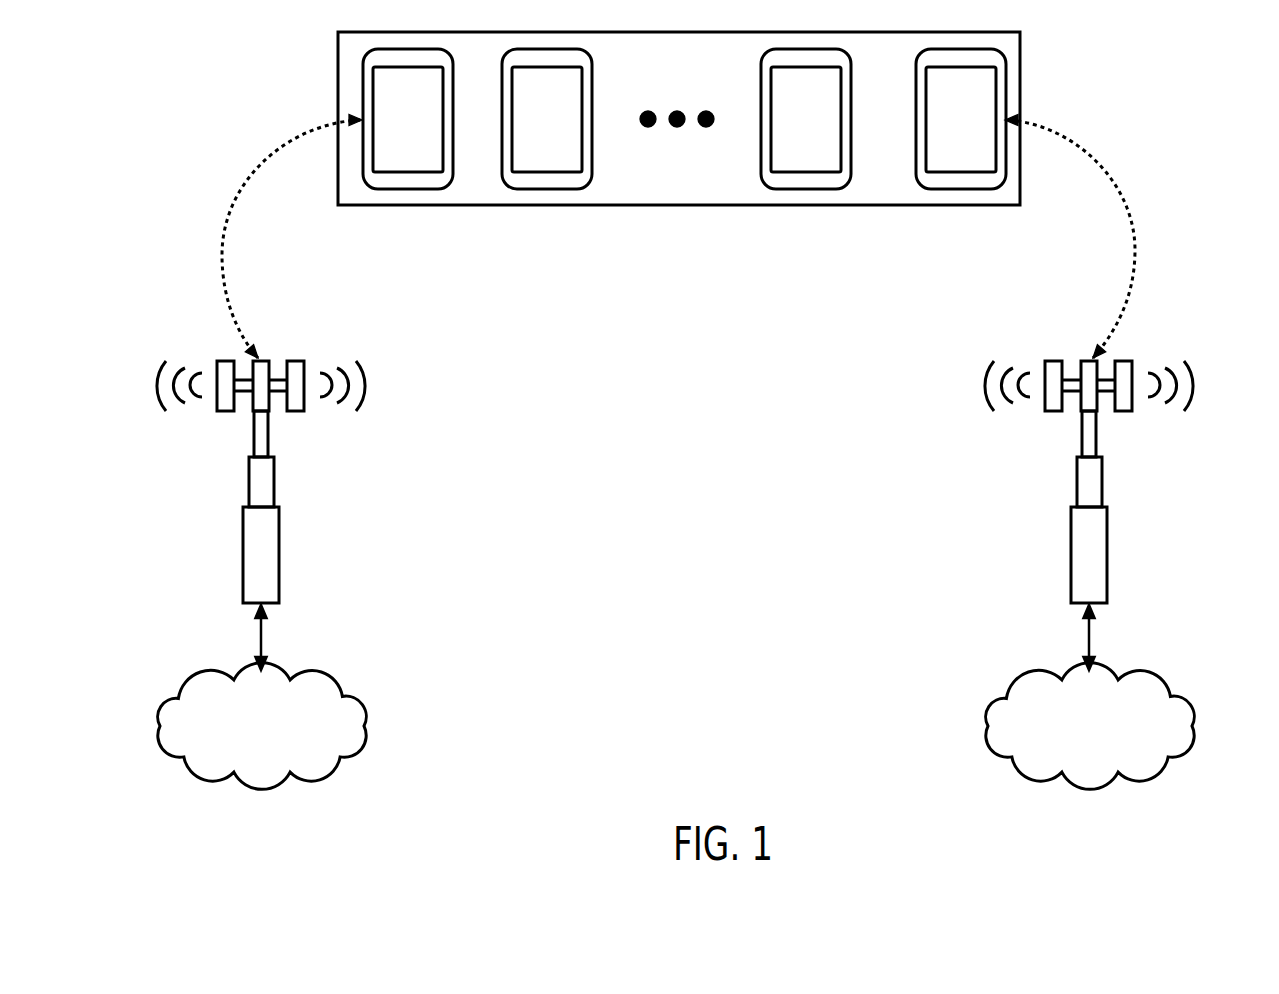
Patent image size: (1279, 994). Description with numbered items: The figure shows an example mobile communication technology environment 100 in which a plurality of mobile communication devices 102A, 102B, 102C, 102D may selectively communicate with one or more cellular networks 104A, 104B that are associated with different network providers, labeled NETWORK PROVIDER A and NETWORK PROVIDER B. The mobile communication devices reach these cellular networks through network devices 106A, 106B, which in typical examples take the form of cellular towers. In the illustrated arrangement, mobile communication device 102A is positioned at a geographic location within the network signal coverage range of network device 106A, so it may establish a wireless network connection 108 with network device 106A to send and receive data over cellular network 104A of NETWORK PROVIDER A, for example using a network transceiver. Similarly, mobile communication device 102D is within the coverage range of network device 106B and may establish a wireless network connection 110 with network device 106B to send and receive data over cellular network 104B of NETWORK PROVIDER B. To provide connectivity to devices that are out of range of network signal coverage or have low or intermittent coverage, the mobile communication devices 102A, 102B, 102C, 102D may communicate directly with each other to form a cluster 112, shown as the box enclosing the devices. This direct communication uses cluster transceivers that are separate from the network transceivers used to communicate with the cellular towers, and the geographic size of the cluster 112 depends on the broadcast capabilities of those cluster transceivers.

The mobile communication technology environment 100 is at (155, 85).
The mobile communication device 102A is at (407, 190).
The mobile communication device 102B is at (543, 190).
The mobile communication device 102C is at (798, 190).
The mobile communication device 102D is at (958, 190).
The cellular network 104A is at (357, 694).
The cellular network 104B is at (1185, 694).
The network device 106A is at (279, 566).
The network device 106B is at (1107, 566).
The wireless network connection 108 is at (225, 235).
The wireless network connection 110 is at (1132, 225).
The cluster 112 is at (673, 207).